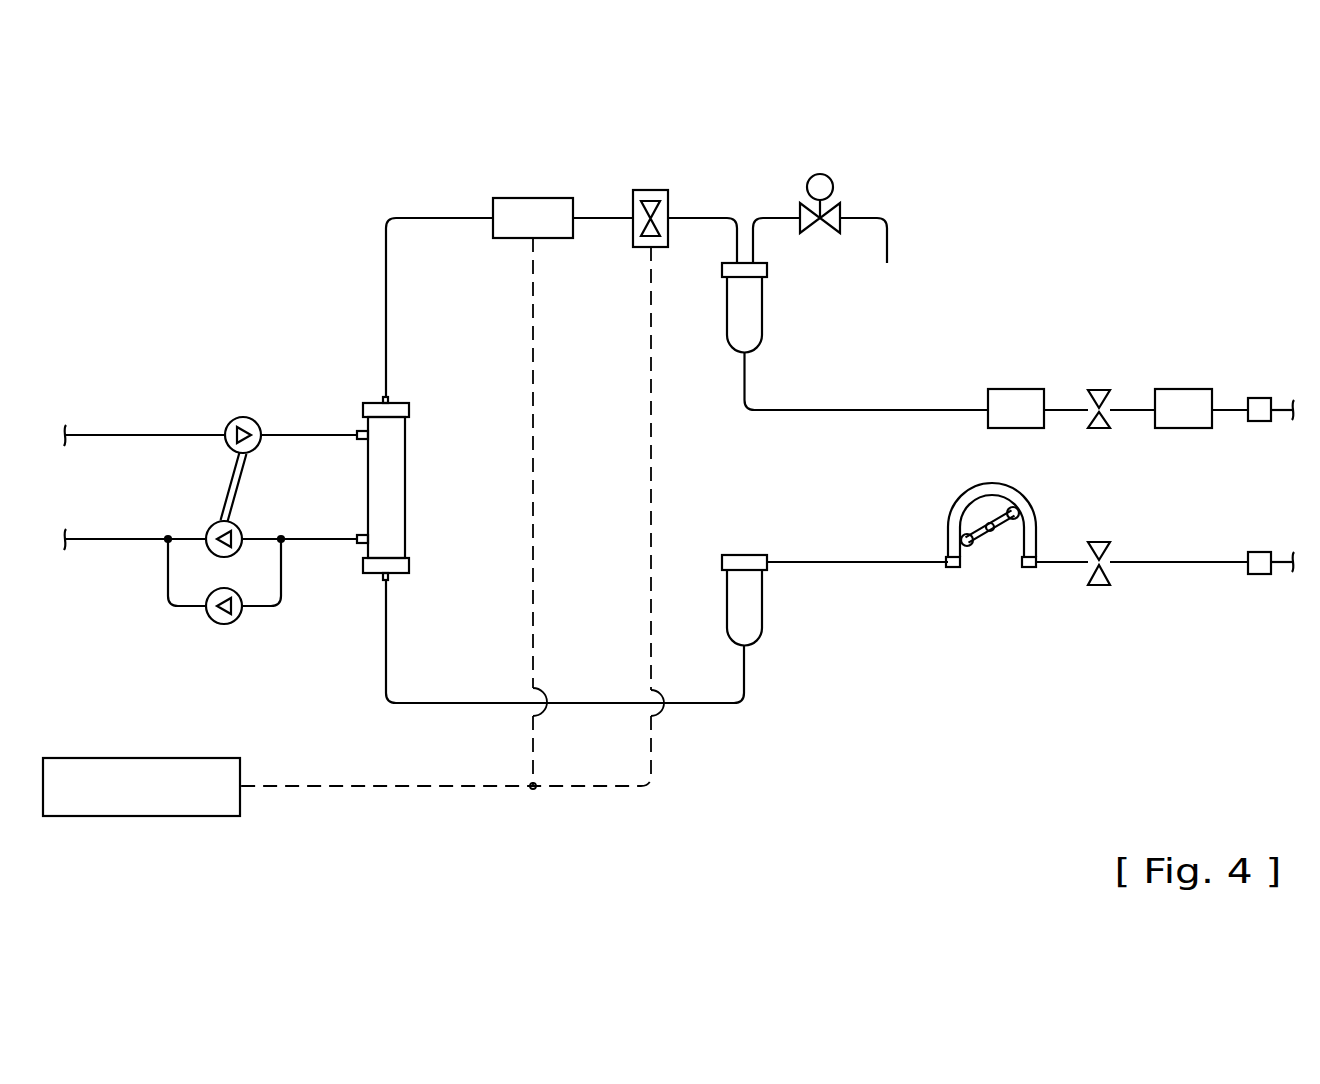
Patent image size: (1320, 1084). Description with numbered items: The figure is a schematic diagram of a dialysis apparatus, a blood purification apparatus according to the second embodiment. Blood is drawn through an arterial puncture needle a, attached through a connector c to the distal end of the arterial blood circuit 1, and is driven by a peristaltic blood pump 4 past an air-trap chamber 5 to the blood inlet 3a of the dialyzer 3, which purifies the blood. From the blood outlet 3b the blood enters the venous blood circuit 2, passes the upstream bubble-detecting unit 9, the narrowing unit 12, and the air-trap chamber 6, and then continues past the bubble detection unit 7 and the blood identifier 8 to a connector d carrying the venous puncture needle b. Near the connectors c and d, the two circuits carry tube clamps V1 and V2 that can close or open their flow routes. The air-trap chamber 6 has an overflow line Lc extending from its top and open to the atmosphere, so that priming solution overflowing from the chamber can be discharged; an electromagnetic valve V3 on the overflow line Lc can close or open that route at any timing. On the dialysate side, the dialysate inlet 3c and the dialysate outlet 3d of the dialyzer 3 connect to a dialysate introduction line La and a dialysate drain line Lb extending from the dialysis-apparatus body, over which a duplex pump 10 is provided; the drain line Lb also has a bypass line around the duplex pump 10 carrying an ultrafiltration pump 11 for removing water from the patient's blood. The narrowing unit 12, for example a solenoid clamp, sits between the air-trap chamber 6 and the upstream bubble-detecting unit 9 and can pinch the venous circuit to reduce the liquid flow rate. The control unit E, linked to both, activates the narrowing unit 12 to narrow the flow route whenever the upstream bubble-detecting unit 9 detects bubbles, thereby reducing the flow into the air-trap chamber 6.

The arterial blood circuit 1 is at (385, 648).
The venous blood circuit 2 is at (878, 408).
The dialyzer 3 is at (408, 487).
The blood inlet 3a is at (390, 578).
The blood outlet 3b is at (390, 399).
The dialysate inlet 3c is at (358, 430).
The dialysate outlet 3d is at (358, 547).
The blood pump 4 is at (974, 586).
The air-trap chamber 5 is at (727, 602).
The air-trap chamber 6 is at (727, 310).
The bubble detection unit 7 is at (1028, 388).
The blood identifier 8 is at (1196, 388).
The upstream bubble-detecting unit 9 is at (522, 197).
The duplex pump 10 is at (201, 489).
The ultrafiltration pump 11 is at (224, 624).
The narrowing unit 12 is at (648, 189).
The tube clamp V1 is at (1100, 541).
The tube clamp V2 is at (1100, 388).
The electromagnetic valve V3 is at (818, 173).
The dialysate introduction line La is at (95, 433).
The dialysate drain line Lb is at (100, 545).
The overflow line Lc is at (862, 217).
The control unit E is at (144, 757).
The arterial puncture needle a is at (1288, 562).
The venous puncture needle b is at (1288, 408).
The connector c is at (1258, 551).
The connector d is at (1258, 397).